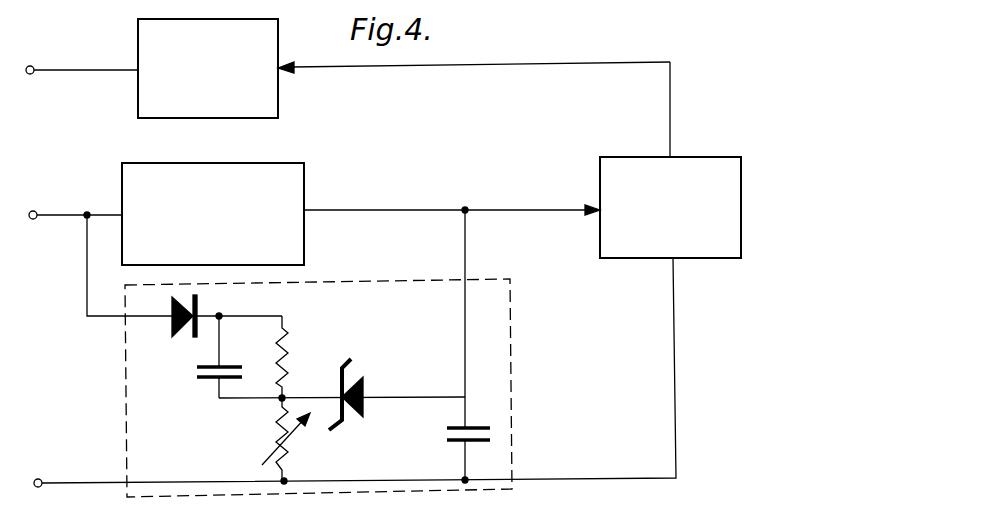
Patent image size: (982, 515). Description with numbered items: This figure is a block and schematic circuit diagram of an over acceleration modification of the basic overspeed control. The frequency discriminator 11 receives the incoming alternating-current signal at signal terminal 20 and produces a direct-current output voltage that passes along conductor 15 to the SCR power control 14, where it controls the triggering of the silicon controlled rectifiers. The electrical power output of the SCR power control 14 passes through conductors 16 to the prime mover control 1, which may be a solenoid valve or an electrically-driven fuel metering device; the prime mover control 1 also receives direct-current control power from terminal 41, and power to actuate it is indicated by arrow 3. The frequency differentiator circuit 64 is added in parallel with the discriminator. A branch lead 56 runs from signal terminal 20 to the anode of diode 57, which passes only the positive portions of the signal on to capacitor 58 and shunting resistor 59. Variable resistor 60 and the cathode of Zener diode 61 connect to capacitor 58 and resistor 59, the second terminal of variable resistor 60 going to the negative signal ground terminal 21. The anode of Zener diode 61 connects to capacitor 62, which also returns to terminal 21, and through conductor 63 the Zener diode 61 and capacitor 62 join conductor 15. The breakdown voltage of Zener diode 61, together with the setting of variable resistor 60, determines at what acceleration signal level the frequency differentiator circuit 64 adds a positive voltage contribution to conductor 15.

The prime mover control 1 is at (279, 40).
The power to actuate the control 3 is at (85, 71).
The terminal 41 is at (31, 66).
The conductors 16 is at (507, 63).
The SCR power control 14 is at (742, 203).
The frequency discriminator 11 is at (305, 183).
The A.-C. signal terminal 20 is at (35, 211).
The conductor 15 is at (523, 210).
The negative (signal ground) terminal 21 is at (40, 479).
The branch lead 56 is at (87, 262).
The frequency differentiator circuit 64 is at (512, 448).
The diode 57 is at (199, 311).
The capacitor 58 is at (195, 371).
The shunting resistor 59 is at (288, 352).
The variable resistor 60 is at (272, 434).
The Zener diode 61 is at (369, 382).
The conductor 63 is at (467, 350).
The capacitor 62 is at (505, 413).